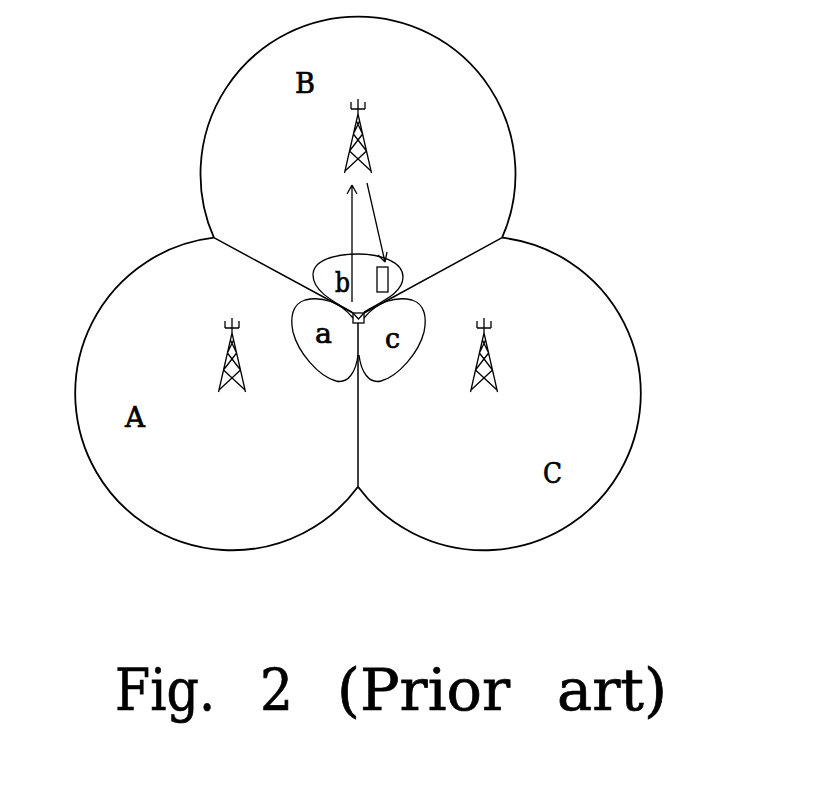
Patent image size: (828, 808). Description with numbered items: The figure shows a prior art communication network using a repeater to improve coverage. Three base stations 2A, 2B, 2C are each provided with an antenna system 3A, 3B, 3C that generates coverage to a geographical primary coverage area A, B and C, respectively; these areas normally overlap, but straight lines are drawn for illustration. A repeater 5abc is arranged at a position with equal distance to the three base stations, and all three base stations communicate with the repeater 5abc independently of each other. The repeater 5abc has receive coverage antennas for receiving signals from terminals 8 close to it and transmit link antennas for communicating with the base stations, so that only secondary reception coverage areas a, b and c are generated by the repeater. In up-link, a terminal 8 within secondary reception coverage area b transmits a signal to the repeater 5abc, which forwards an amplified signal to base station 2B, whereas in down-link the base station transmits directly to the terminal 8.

The base station 2A is at (233, 388).
The base station 2B is at (383, 160).
The base station 2C is at (493, 387).
The antenna system 3A is at (238, 308).
The antenna system 3B is at (363, 85).
The antenna system 3C is at (491, 306).
The repeater 5abc is at (365, 323).
The terminal 8 is at (370, 300).